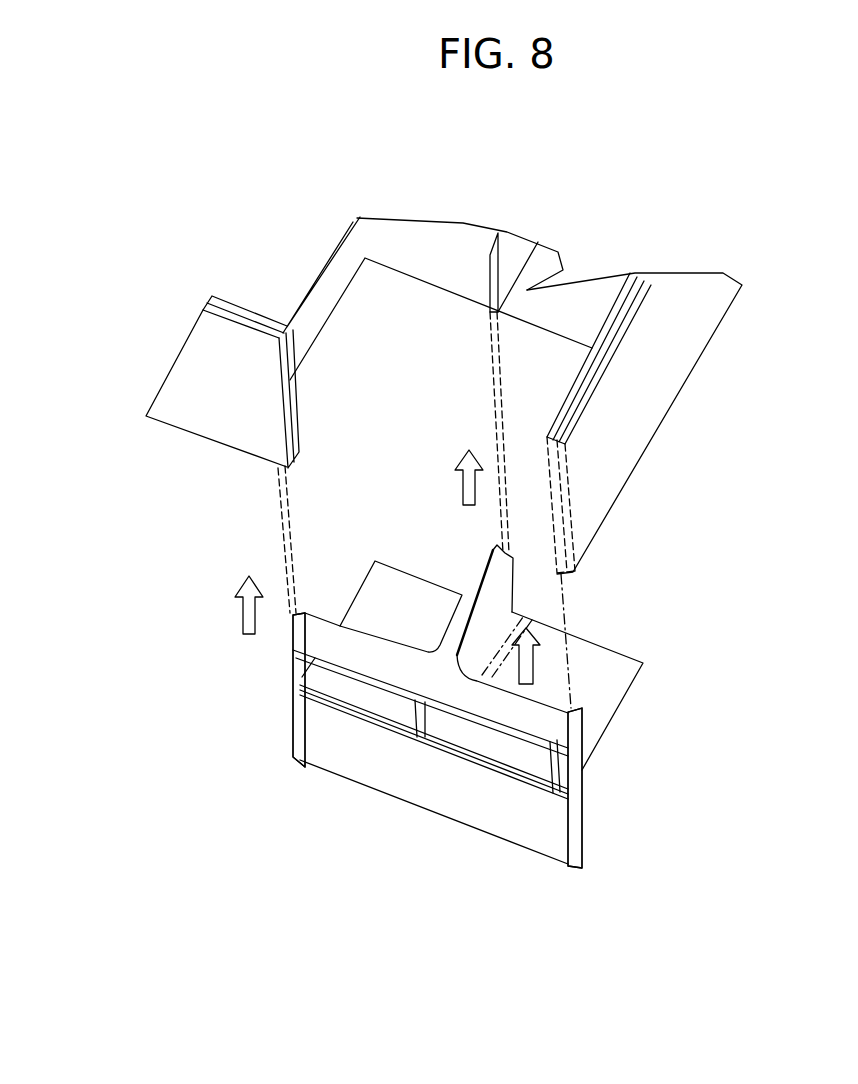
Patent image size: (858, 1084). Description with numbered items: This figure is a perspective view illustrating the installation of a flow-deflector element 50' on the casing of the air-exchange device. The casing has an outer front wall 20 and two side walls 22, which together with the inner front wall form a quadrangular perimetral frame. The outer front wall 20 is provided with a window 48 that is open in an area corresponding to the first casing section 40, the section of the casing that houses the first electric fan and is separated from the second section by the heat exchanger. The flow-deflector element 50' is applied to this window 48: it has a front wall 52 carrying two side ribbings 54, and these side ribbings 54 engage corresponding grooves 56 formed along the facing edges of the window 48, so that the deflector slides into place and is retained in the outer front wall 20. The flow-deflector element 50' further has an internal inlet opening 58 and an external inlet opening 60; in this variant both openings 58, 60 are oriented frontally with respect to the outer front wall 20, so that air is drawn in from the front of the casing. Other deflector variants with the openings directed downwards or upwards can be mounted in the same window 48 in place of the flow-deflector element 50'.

The outer front wall 20 is at (210, 418).
The side walls 22 is at (617, 447).
The first casing section 40 is at (233, 508).
The window 48 is at (292, 400).
The flow-deflector element 50' is at (552, 709).
The front wall 52 is at (490, 813).
The side ribbings 54 is at (290, 635).
The grooves 56 is at (292, 417).
The internal inlet opening 58 is at (347, 703).
The external inlet opening 60 is at (500, 760).